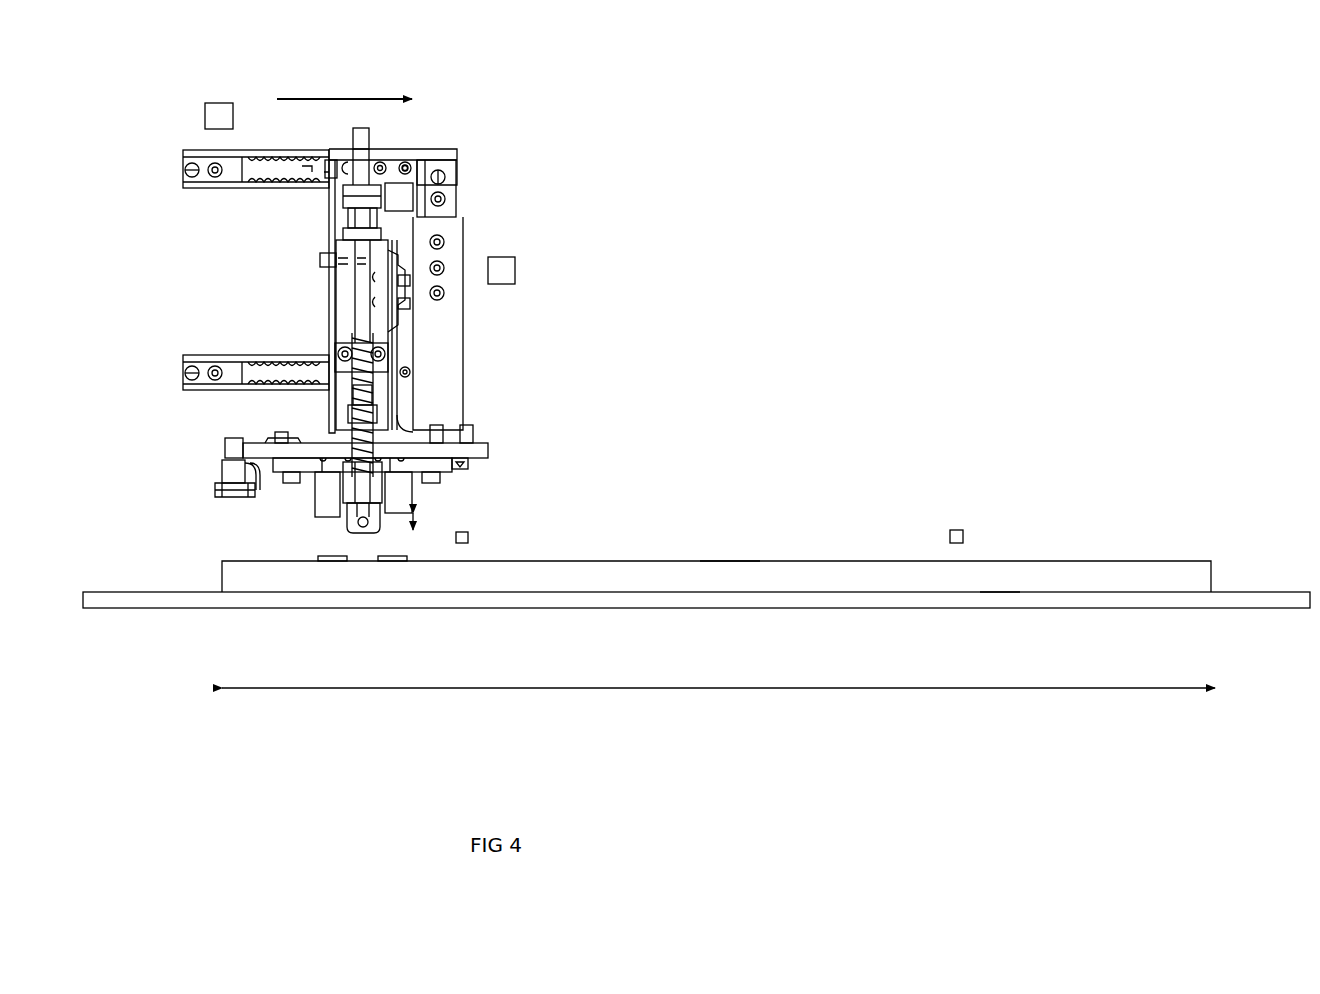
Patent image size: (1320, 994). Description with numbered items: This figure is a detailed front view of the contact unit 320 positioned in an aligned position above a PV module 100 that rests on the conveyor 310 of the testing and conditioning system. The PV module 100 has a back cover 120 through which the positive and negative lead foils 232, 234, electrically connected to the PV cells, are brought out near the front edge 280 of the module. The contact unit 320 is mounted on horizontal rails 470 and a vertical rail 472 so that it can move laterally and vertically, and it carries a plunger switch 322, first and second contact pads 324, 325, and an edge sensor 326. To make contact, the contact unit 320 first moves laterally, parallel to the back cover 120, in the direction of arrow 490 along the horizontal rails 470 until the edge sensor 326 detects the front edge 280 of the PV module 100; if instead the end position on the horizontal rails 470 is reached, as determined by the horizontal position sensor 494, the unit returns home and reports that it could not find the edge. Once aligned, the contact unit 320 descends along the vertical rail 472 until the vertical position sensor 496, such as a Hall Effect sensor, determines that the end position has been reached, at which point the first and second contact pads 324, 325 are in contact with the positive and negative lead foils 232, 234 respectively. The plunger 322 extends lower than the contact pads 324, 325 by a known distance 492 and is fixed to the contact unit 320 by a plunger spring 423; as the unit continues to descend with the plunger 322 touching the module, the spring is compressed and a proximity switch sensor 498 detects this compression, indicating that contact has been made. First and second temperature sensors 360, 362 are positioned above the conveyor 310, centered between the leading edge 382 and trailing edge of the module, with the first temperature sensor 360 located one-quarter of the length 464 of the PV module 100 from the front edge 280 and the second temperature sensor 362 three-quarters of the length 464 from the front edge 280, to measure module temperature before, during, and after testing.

The PV module 100 is at (684, 576).
The back cover 120 is at (815, 557).
The positive lead foil 232 is at (378, 557).
The negative lead foil 234 is at (318, 557).
The front edge 280 is at (222, 574).
The conveyor 310 is at (1095, 608).
The contact unit 320 is at (551, 308).
The plunger switch 322 is at (360, 533).
The first contact pad 324 is at (415, 492).
The second contact pad 325 is at (315, 500).
The edge sensor 326 is at (222, 490).
The first temperature sensor 360 is at (468, 537).
The second temperature sensor 362 is at (957, 530).
The leading edge 382 is at (1000, 575).
The plunger spring 423 is at (372, 388).
The length 464 is at (673, 689).
The horizontal rails 470 is at (173, 175).
The vertical rail 472 is at (456, 190).
The arrow 490 is at (350, 99).
The known distance 492 is at (425, 514).
The horizontal position sensor 494 is at (219, 103).
The vertical position sensor 496 is at (515, 272).
The proximity switch sensor 498 is at (406, 160).